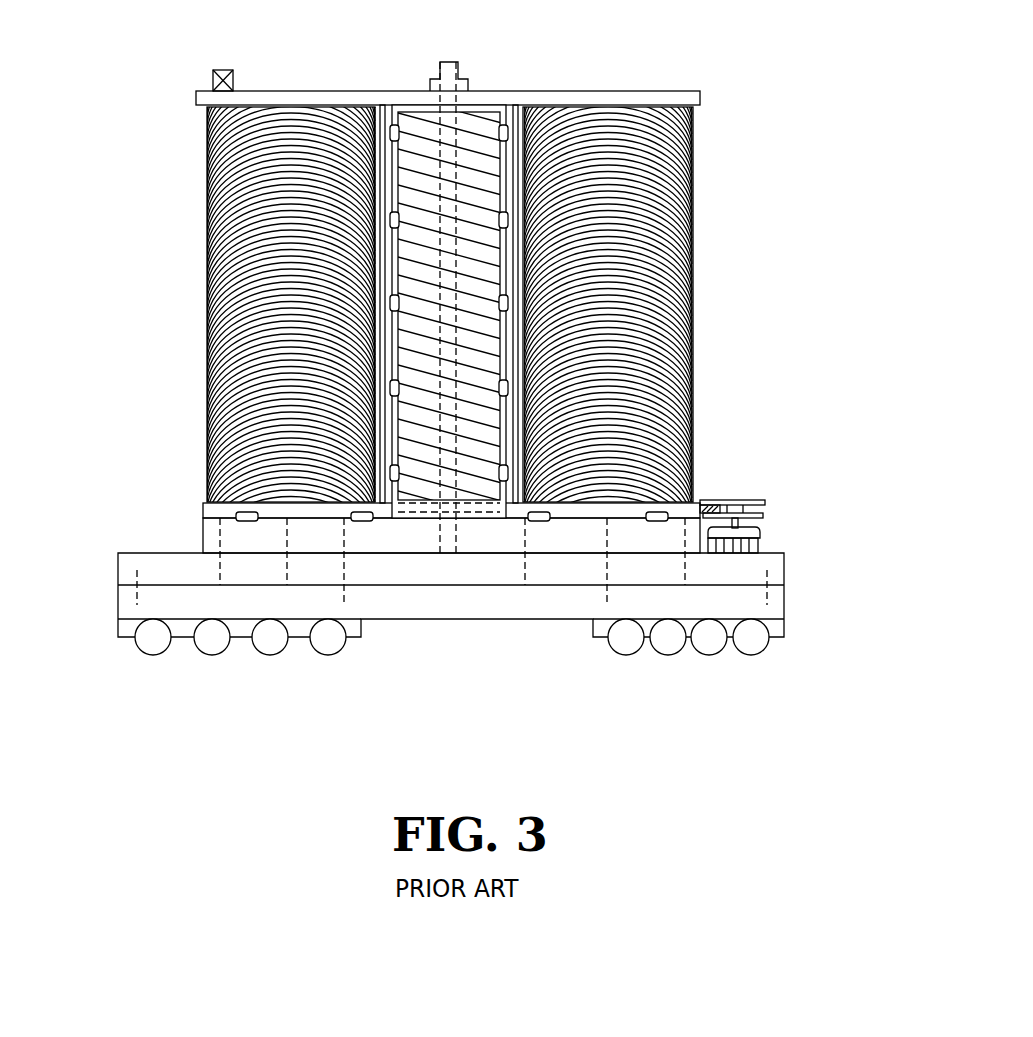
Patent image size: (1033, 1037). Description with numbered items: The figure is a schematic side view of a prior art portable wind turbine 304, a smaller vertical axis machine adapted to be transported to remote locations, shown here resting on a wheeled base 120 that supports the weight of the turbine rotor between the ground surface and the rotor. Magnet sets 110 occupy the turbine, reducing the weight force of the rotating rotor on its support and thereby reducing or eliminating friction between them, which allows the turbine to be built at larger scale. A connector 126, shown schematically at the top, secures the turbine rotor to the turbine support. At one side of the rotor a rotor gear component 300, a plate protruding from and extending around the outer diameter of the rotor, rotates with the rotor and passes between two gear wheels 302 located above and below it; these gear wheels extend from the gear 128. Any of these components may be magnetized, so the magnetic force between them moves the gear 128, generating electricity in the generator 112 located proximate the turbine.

The portable wind turbine 304 is at (670, 50).
The magnet sets 110 is at (393, 127).
The connector 126 is at (458, 77).
The gear 128 is at (718, 500).
The rotor gear component 300 is at (703, 505).
The gear wheels 302 is at (767, 501).
The generator 112 is at (767, 541).
The base 120 is at (118, 581).